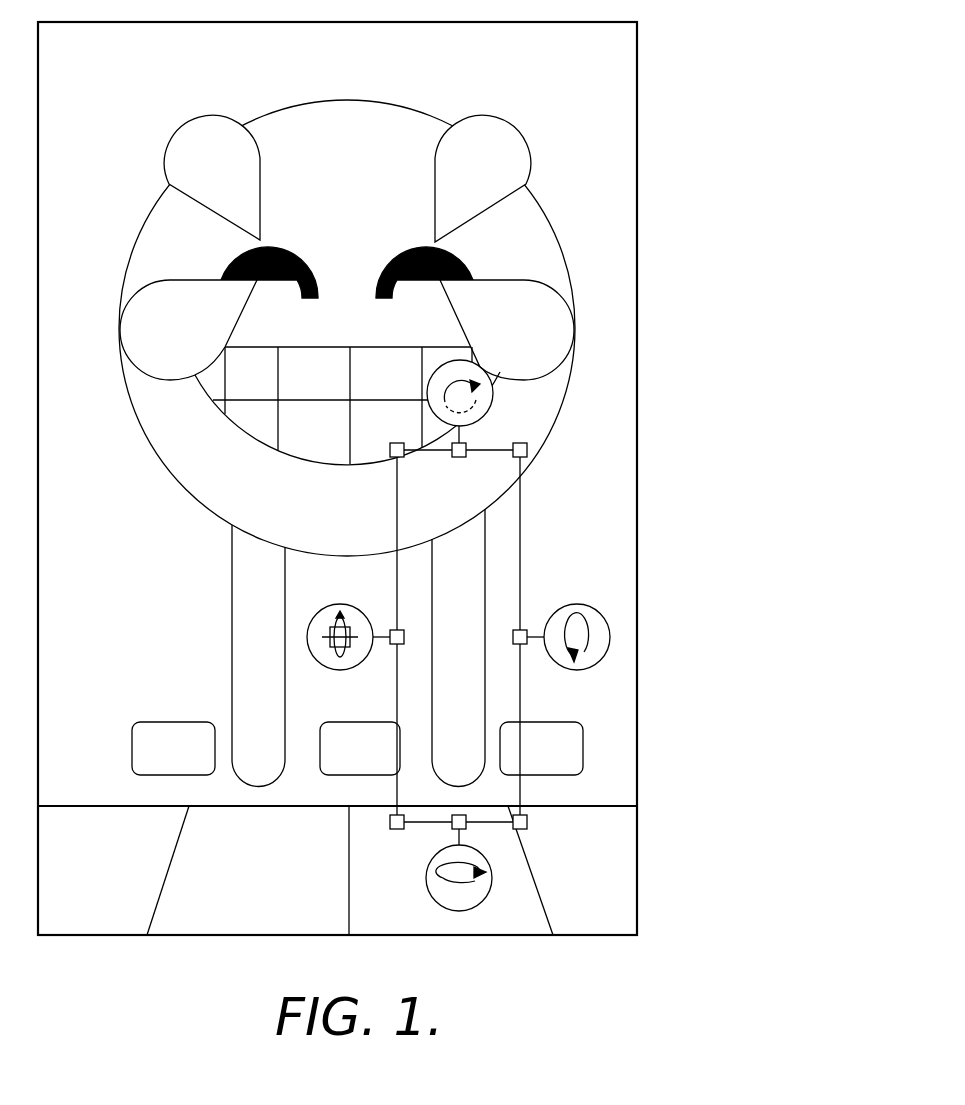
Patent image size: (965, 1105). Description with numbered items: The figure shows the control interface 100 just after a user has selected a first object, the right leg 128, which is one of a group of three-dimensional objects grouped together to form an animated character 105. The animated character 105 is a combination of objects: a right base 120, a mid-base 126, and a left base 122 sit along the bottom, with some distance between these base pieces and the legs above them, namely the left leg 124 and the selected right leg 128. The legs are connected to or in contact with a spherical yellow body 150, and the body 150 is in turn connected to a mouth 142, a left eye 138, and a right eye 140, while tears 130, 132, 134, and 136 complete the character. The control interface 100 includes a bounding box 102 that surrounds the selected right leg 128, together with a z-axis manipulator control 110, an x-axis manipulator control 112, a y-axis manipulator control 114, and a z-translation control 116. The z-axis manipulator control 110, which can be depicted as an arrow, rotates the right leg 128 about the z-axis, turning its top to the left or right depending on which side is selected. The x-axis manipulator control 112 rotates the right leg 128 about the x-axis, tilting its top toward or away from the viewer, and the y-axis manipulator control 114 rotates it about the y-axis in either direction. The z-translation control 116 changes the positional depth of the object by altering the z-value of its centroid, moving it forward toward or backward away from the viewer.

The control interface 100 is at (528, 522).
The bounding box 102 is at (520, 540).
The animated character 105 is at (652, 237).
The z-axis manipulator control 110 is at (478, 364).
The x-axis manipulator control 112 is at (577, 671).
The y-axis manipulator control 114 is at (427, 878).
The z-translation control 116 is at (341, 604).
The right base 120 is at (584, 760).
The left base 122 is at (132, 750).
The left leg 124 is at (262, 790).
The mid-base 126 is at (343, 777).
The right leg 128 is at (478, 586).
The tear 130 is at (165, 148).
The tear 132 is at (124, 344).
The tear 134 is at (529, 147).
The tear 136 is at (569, 328).
The left eye 138 is at (232, 266).
The right eye 140 is at (462, 262).
The mouth 142 is at (224, 425).
The spherical yellow body 150 is at (552, 232).